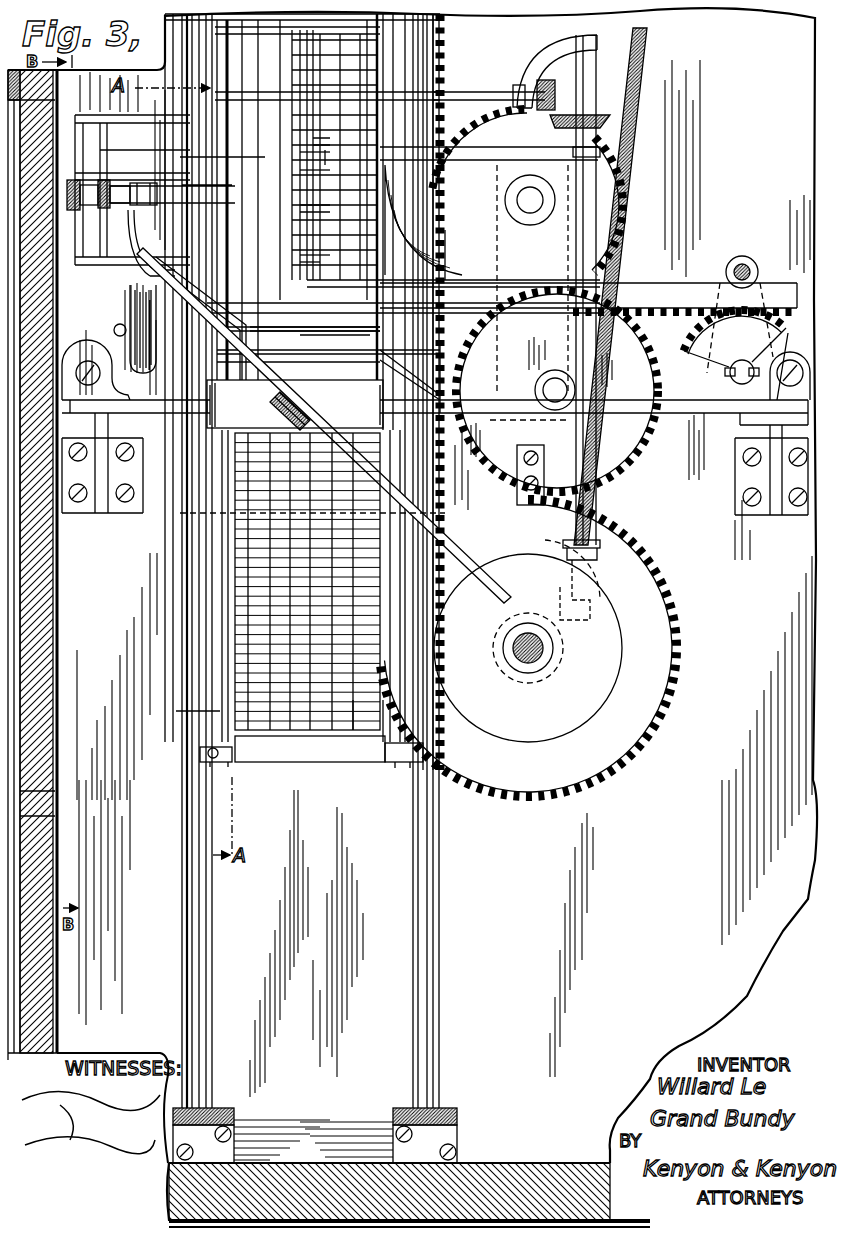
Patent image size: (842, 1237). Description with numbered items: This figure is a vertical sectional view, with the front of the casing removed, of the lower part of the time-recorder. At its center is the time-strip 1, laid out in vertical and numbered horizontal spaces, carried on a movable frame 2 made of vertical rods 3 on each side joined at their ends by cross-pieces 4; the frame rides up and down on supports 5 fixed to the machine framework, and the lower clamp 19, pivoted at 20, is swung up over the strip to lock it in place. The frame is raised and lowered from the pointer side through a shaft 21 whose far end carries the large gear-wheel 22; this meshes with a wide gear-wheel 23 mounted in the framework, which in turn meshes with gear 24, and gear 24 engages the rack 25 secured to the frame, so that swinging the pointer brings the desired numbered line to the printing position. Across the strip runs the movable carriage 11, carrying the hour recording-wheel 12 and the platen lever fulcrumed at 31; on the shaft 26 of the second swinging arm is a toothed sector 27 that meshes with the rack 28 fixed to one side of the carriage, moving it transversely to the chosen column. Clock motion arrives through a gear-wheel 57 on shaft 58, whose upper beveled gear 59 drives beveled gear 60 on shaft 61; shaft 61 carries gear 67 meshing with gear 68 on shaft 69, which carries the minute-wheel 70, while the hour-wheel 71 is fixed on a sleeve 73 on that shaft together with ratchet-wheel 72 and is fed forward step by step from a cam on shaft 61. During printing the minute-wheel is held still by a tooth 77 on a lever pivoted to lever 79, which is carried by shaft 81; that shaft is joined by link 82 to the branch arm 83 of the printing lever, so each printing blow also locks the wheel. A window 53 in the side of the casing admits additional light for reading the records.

The time-strip 1 is at (358, 717).
The movable frame 2 is at (362, 747).
The vertical rods 3 is at (385, 750).
The cross-pieces 4 is at (402, 750).
The supports 5 is at (458, 956).
The movable carriage 11 is at (447, 252).
The hour recording-wheel 12 is at (66, 195).
The clamp 19 is at (267, 748).
The pivot 20 is at (200, 755).
The shaft 21 is at (542, 662).
The gear-wheel 22 is at (657, 642).
The gear-wheel 23 is at (630, 443).
The gear 24 is at (597, 173).
The rack 25 is at (446, 61).
The shaft 26 is at (750, 375).
The toothed sector 27 is at (736, 328).
The rack 28 is at (588, 297).
The fulcrum 31 is at (280, 405).
The window 53 is at (22, 547).
The gear-wheel 57 is at (603, 558).
The shaft 58 is at (589, 193).
The beveled gear 59 is at (593, 116).
The beveled gear 60 is at (563, 33).
The shaft 61 is at (490, 90).
The gear 67 is at (315, 147).
The gear 68 is at (315, 155).
The shaft 69 is at (318, 173).
The minute-wheel 70 is at (323, 257).
The hour-wheel 71 is at (262, 158).
The ratchet-wheel 72 is at (327, 152).
The sleeve 73 is at (230, 185).
The tooth 77 is at (320, 207).
The lever 79 is at (307, 263).
The shaft 81 is at (317, 329).
The link 82 is at (213, 330).
The branch arm 83 is at (295, 404).